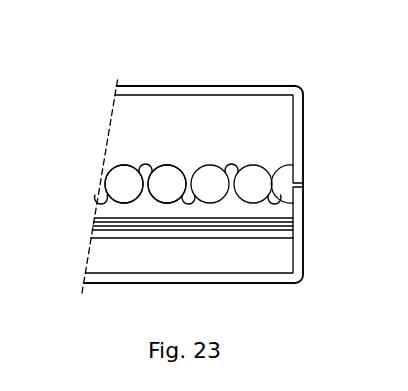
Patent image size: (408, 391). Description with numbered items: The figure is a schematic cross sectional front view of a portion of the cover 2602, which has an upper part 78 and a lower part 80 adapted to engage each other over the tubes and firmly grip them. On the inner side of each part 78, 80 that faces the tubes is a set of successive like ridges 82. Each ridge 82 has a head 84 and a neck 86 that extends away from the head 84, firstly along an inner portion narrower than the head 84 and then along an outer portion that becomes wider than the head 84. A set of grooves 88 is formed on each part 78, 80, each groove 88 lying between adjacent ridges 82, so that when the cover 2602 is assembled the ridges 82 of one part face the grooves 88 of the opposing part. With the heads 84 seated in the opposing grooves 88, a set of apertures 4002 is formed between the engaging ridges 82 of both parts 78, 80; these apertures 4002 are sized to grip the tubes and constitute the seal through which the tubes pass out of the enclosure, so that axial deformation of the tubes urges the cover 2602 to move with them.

The cover 2602 is at (147, 64).
The upper part 78 is at (318, 84).
The lower part 80 is at (319, 268).
The ridges 82 is at (139, 148).
The head 84 is at (236, 164).
The neck 86 is at (237, 168).
The grooves 88 is at (235, 168).
The apertures 4002 is at (111, 179).